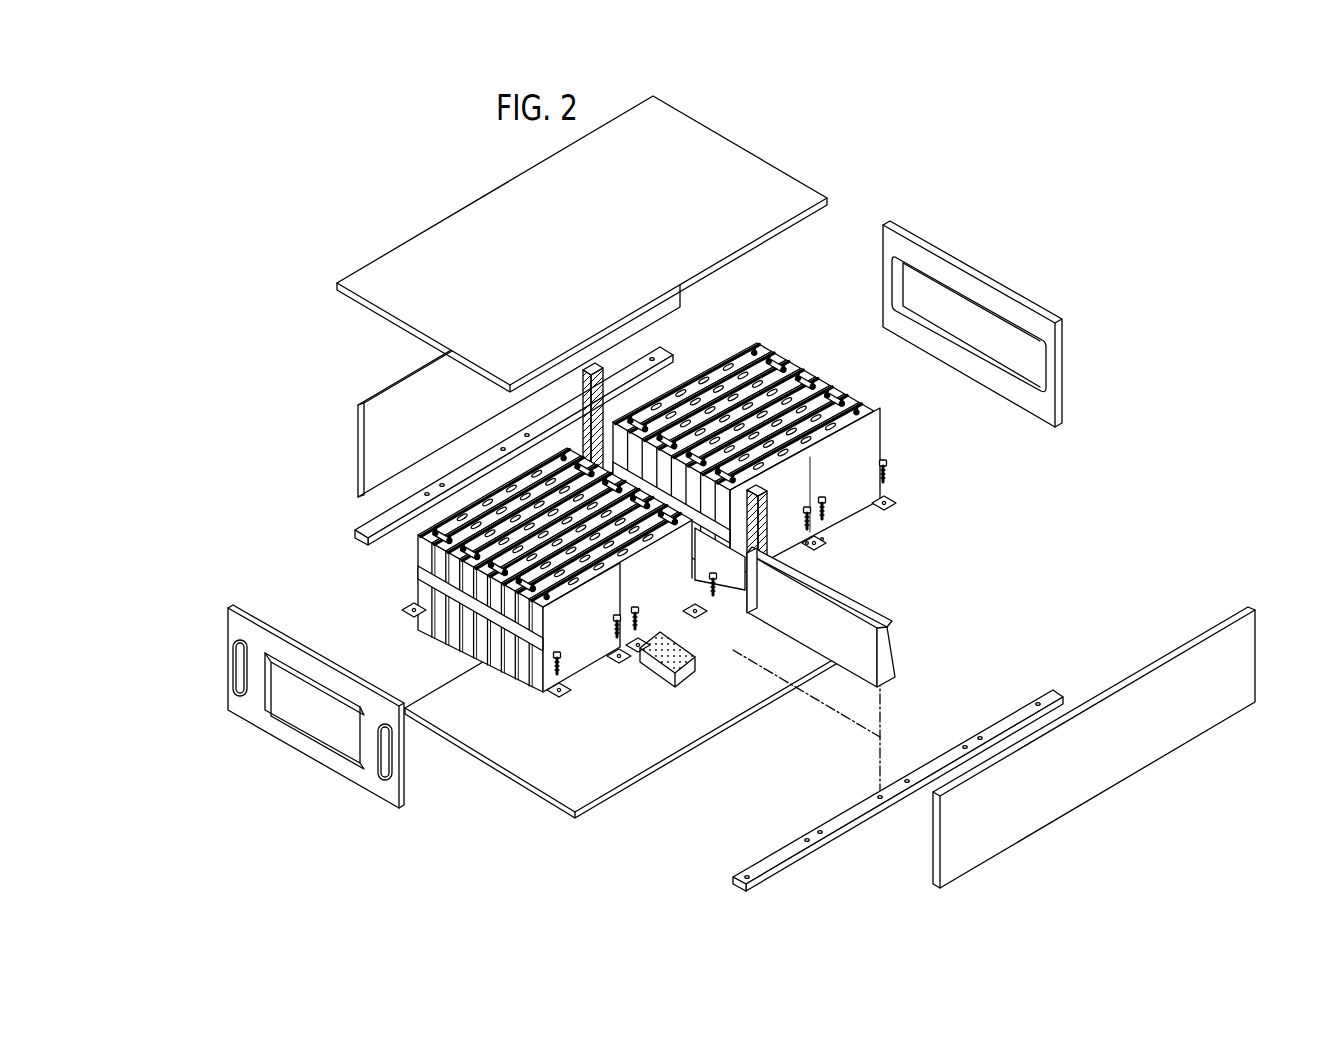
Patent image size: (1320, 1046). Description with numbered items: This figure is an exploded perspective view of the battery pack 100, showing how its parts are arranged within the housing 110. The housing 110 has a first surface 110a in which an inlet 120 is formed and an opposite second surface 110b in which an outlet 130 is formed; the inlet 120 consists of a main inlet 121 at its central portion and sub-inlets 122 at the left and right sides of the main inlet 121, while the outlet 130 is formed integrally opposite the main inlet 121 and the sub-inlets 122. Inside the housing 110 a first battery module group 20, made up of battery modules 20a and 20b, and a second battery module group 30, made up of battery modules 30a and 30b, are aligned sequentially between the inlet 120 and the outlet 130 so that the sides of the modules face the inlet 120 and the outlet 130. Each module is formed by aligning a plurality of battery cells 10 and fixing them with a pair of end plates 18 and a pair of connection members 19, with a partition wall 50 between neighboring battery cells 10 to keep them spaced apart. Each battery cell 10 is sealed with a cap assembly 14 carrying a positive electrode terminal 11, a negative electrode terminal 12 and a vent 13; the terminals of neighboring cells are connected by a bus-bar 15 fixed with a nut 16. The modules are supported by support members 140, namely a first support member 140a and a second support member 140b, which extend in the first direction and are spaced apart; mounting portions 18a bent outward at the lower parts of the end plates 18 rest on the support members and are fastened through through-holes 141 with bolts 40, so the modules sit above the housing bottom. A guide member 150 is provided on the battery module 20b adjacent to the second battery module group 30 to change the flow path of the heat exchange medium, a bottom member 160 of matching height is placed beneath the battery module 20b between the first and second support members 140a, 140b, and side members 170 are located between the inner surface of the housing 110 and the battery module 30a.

The battery pack 100 is at (357, 184).
The housing 110 is at (372, 376).
The first surface 110a is at (286, 689).
The second surface 110b is at (972, 295).
The outlet 130 is at (995, 340).
The side member 170 is at (590, 366).
The battery cell 10 is at (524, 595).
The first battery module group 20 is at (763, 508).
The battery module 20a is at (596, 635).
The battery module 20b is at (660, 603).
The positive electrode terminal 11 is at (755, 342).
The negative electrode terminal 12 is at (693, 377).
The vent 13 is at (727, 358).
The cap assembly 14 is at (708, 368).
The bus-bar 15 is at (880, 403).
The nut 16 is at (870, 382).
The end plate 18 is at (880, 443).
The mounting portion 18a is at (633, 668).
The connection member 19 is at (425, 578).
The partition wall 50 is at (497, 672).
The bolt 40 is at (612, 622).
The second battery module group 30 is at (876, 529).
The battery module 30a is at (785, 518).
The battery module 30b is at (862, 465).
The guide member 150 is at (896, 662).
The bottom member 160 is at (637, 681).
The support member 140 is at (540, 826).
The first support member 140a is at (745, 862).
The second support member 140b is at (361, 546).
The through-hole 141 is at (441, 483).
The inlet 120 is at (346, 812).
The main inlet 121 is at (323, 700).
The sub-inlet 122 is at (241, 668).